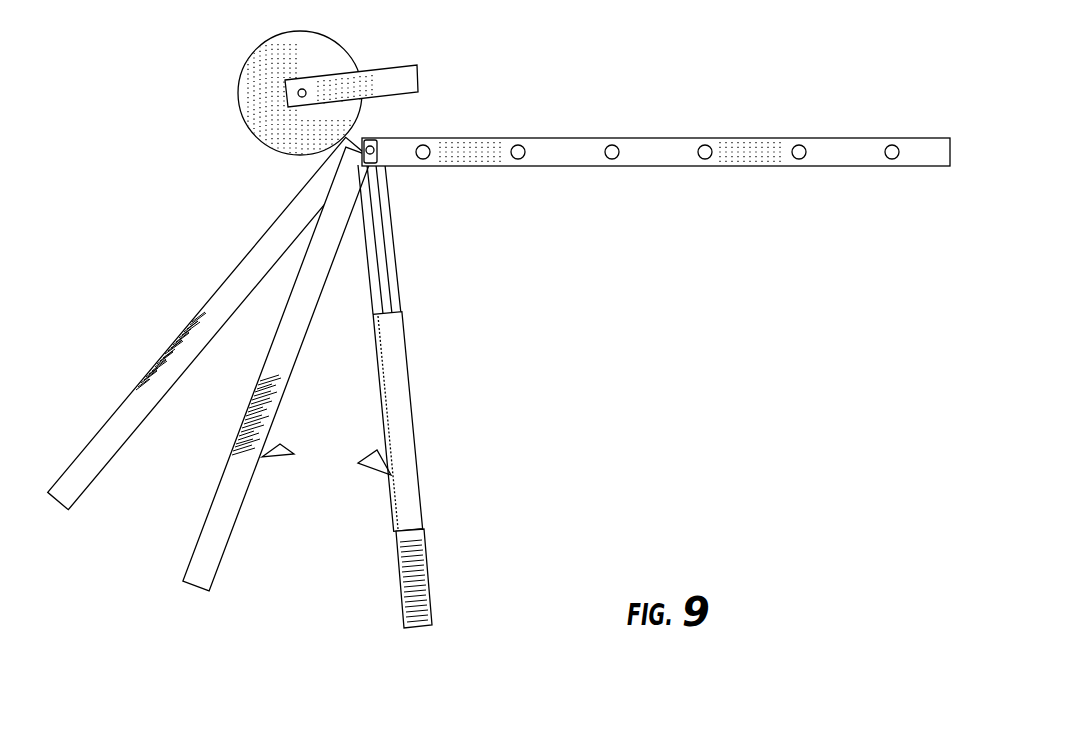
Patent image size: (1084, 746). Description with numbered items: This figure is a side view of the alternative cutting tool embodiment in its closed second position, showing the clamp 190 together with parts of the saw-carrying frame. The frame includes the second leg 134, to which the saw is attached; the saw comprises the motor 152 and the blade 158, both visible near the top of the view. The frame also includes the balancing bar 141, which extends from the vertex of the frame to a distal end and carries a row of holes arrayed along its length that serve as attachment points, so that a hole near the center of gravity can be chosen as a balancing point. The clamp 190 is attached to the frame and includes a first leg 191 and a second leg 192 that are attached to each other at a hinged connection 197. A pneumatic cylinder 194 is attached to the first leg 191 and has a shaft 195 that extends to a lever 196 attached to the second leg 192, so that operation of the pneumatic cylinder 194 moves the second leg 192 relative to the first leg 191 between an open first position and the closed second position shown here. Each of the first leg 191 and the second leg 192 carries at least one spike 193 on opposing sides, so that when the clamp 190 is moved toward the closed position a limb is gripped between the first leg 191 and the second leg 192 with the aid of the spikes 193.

The blade 158 is at (239, 95).
The motor 152 is at (322, 76).
The second leg 134 is at (207, 297).
The second leg 192 is at (238, 517).
The shaft 195 is at (380, 262).
The pneumatic cylinder 194 is at (402, 380).
The first leg 191 is at (428, 588).
The balancing bar 141 is at (656, 140).
The hinged connection 197 is at (378, 142).
The lever 196 is at (374, 152).
The spike 193 is at (377, 450).
The clamp 190 is at (646, 314).